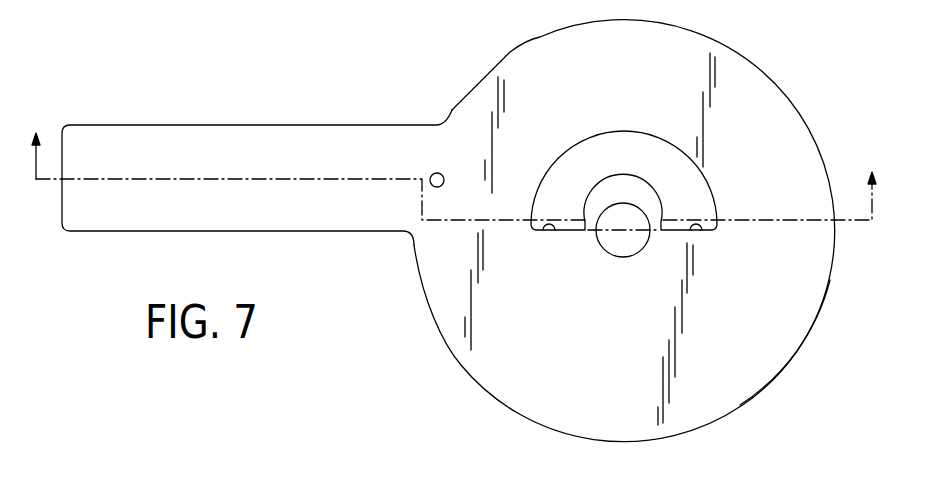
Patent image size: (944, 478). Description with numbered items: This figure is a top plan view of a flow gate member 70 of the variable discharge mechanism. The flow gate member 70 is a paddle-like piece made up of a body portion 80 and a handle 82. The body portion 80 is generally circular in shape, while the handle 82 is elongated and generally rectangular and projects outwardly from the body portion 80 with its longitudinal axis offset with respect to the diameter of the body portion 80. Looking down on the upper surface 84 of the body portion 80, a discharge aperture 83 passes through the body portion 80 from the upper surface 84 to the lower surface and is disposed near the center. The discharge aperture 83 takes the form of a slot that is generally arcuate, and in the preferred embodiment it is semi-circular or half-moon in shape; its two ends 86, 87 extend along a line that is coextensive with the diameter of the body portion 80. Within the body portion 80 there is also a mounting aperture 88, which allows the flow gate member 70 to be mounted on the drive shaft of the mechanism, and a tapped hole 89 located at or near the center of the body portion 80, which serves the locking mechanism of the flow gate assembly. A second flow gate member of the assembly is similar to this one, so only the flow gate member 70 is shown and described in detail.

The flow gate member 70 is at (360, 325).
The body portion 80 is at (788, 105).
The handle 82 is at (252, 127).
The discharge aperture 83 is at (622, 143).
The upper surface 84 is at (803, 319).
The end of discharge aperture 86 is at (543, 236).
The end of discharge aperture 87 is at (695, 235).
The mounting aperture 88 is at (622, 258).
The tapped hole 89 is at (437, 172).